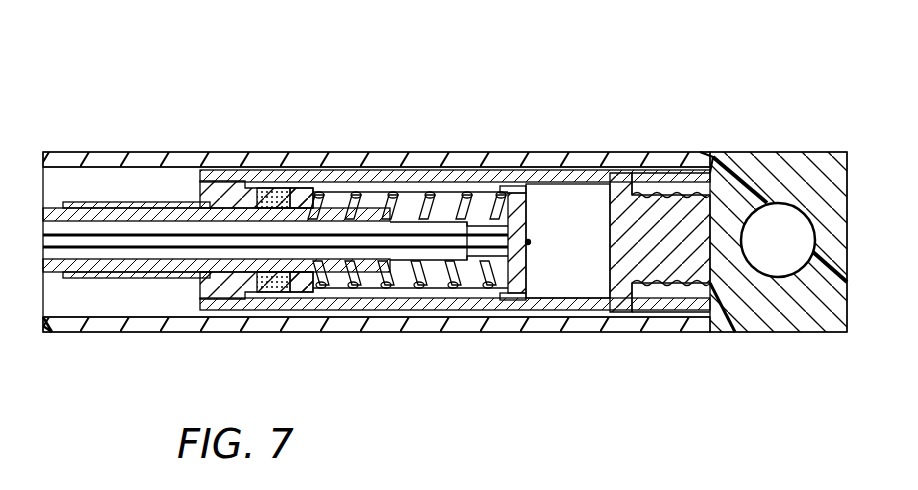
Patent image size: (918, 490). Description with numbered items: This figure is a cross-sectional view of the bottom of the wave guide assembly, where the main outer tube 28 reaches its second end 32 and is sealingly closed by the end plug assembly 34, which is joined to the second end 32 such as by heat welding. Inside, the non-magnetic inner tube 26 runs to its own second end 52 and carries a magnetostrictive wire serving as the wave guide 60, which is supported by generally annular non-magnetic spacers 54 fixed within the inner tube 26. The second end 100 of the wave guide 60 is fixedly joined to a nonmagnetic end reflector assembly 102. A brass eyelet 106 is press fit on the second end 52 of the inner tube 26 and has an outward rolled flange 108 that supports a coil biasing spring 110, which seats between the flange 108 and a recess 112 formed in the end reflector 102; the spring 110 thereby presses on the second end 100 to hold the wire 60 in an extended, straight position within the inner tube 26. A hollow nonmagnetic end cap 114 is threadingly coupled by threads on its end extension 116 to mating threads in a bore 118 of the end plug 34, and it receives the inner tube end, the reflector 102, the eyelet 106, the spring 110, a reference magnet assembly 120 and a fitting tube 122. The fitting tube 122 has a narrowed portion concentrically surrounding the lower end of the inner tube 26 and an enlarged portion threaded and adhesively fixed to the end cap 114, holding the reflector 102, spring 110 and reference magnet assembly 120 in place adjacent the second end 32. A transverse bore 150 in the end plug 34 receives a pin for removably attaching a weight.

The inner tube 26 is at (57, 202).
The main outer tube 28 is at (584, 153).
The second end of the outer tube 32 is at (700, 153).
The end plug assembly 34 is at (820, 316).
The second end of the inner tube 52 is at (430, 192).
The non-magnetic spacers 54 is at (483, 220).
The wave guide 60 is at (165, 235).
The second end of the wave guide 100 is at (530, 242).
The end reflector assembly 102 is at (522, 300).
The eyelet 106 is at (363, 276).
The rolled flange 108 is at (315, 192).
The biasing spring 110 is at (346, 196).
The recess 112 is at (513, 188).
The end cap 114 is at (603, 178).
The end extension 116 is at (667, 288).
The bore 118 is at (708, 283).
The reference magnet assembly 120 is at (276, 284).
The fitting tube 122 is at (130, 274).
The bore 150 is at (781, 207).